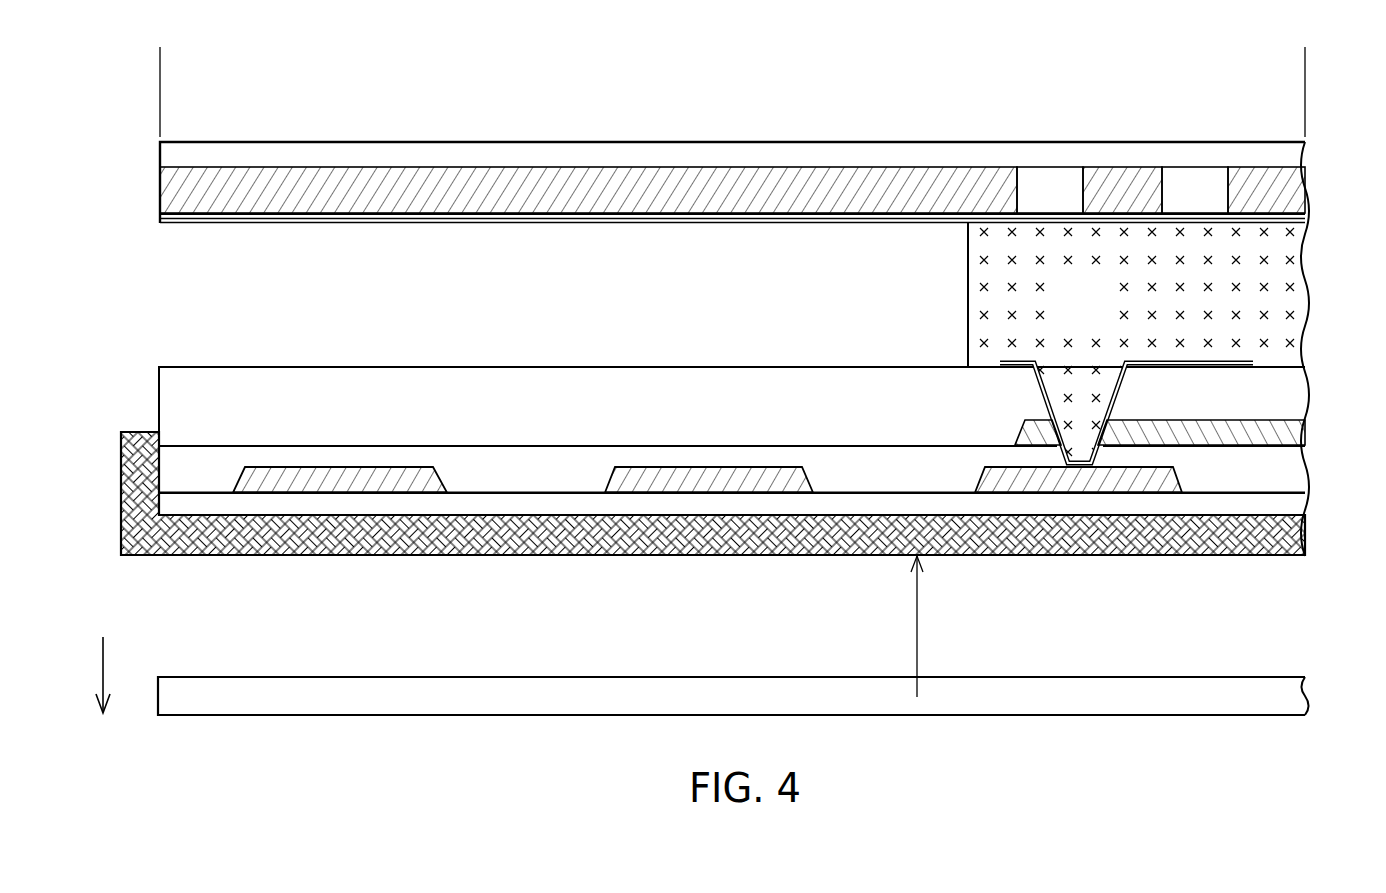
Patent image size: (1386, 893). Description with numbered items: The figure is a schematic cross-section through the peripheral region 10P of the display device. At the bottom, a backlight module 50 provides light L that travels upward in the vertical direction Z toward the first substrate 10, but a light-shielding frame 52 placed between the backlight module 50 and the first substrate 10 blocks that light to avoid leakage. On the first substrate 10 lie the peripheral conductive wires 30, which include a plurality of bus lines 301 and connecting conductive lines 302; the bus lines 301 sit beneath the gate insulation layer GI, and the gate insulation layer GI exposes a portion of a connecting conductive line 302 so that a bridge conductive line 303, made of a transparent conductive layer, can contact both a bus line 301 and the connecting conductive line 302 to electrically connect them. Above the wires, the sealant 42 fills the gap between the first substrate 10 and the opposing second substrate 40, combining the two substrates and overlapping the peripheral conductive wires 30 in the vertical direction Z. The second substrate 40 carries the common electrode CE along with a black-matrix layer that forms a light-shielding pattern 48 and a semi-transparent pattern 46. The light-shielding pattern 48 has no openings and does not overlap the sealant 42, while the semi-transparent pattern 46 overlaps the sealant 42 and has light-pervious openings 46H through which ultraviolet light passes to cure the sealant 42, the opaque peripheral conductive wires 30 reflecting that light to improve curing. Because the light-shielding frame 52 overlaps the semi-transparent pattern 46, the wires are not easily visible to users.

The peripheral region 10P is at (1289, 60).
The second substrate 40 is at (1273, 152).
The light-shielding pattern 48 is at (563, 178).
The semi-transparent pattern 46 is at (1120, 177).
The light-pervious opening 46H is at (1193, 180).
The common electrode CE is at (1280, 218).
The sealant 42 is at (1070, 318).
The peripheral conductive wires 30 is at (807, 473).
The bridge conductive line 303 is at (1233, 362).
The connecting conductive line 302 is at (1282, 432).
The bus line 301 is at (348, 482).
The gate insulation layer GI is at (1281, 485).
The first substrate 10 is at (1278, 505).
The light-shielding frame 52 is at (1280, 538).
The backlight module 50 is at (1278, 695).
The light L is at (917, 648).
The vertical direction Z is at (103, 658).